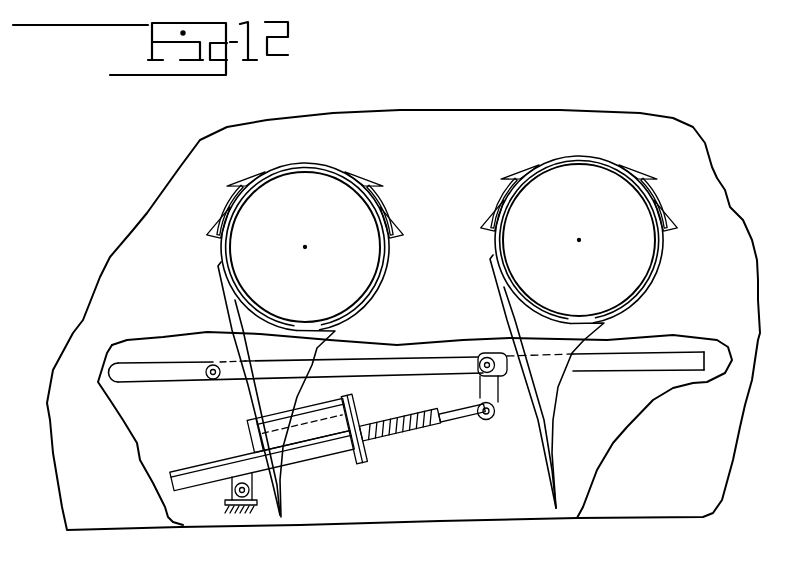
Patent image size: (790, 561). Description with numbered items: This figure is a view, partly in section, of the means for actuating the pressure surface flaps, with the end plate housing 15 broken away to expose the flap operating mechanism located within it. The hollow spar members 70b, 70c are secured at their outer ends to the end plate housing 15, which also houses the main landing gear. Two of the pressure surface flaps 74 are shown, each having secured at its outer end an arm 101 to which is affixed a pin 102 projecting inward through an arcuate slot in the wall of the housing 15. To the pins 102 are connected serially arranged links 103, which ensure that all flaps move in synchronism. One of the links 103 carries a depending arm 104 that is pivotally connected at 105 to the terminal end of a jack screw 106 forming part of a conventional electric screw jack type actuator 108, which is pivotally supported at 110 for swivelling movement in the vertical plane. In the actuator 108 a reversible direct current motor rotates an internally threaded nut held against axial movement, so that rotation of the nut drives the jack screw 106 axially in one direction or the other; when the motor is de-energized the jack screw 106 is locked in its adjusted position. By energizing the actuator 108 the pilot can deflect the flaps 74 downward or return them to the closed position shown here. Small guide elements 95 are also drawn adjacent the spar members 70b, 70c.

The end plate housing 15 is at (105, 492).
The hollow spar member 70b is at (347, 312).
The hollow spar member 70c is at (622, 310).
The guide flaps 95 is at (222, 206).
The pressure surface flap 74 is at (252, 384).
The arm 101 is at (238, 357).
The pin 102 is at (206, 377).
The link 103 is at (124, 374).
The depending arm 104 is at (478, 390).
The pivot connection 105 is at (485, 419).
The jack screw 106 is at (453, 428).
The screw jack type actuator 108 is at (309, 457).
The pivot support 110 is at (233, 496).